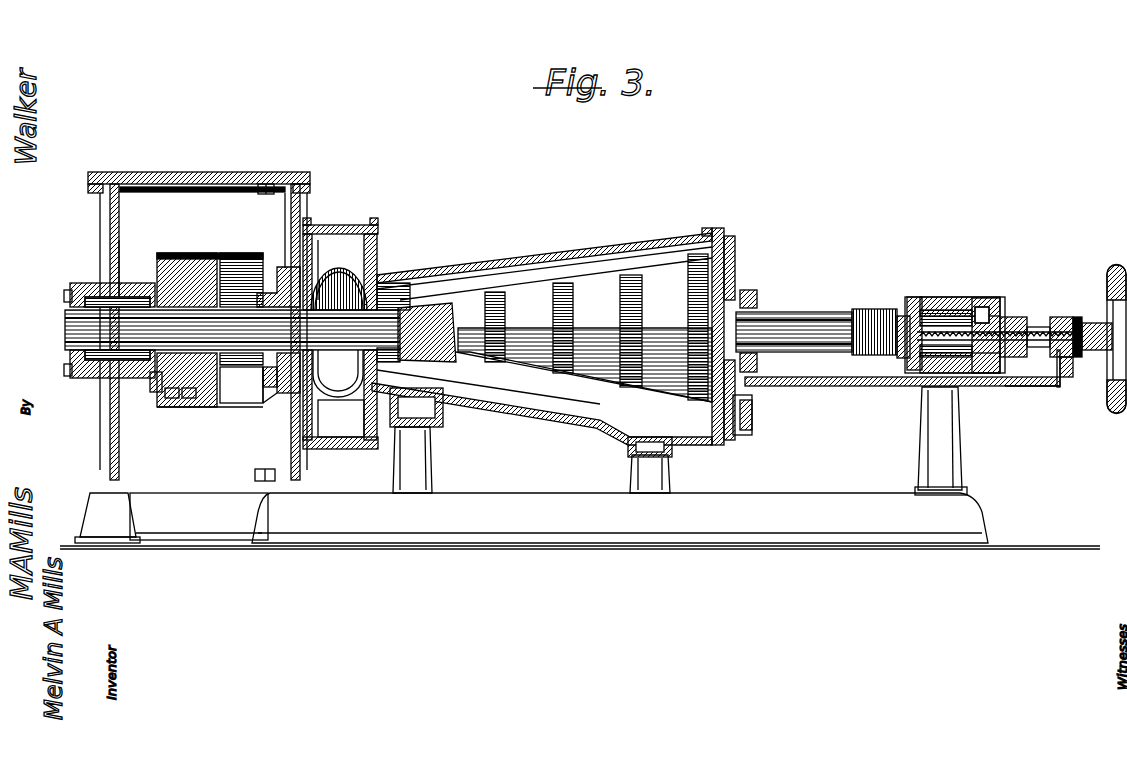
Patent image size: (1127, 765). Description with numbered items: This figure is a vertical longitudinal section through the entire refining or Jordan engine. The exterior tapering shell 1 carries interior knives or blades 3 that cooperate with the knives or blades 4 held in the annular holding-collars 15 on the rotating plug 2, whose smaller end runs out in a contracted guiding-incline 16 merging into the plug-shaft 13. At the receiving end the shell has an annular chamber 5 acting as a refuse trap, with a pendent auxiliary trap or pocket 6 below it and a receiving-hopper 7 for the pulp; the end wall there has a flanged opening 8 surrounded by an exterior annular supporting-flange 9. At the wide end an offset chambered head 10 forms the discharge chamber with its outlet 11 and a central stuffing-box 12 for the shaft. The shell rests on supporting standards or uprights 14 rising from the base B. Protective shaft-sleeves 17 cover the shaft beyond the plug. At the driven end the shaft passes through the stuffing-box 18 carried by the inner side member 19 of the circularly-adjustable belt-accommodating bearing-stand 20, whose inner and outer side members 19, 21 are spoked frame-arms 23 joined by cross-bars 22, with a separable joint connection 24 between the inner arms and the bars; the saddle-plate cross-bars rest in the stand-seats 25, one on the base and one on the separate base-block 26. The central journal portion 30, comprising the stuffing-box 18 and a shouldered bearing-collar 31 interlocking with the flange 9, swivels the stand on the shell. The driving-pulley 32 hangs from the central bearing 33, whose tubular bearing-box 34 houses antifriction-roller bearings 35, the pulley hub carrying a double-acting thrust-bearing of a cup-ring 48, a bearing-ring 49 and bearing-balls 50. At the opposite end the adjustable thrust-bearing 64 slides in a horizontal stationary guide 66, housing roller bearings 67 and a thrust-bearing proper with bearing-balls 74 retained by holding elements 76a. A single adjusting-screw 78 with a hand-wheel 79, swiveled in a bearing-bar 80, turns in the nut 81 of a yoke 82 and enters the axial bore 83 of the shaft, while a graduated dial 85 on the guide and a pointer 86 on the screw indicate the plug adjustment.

The base B is at (580, 521).
The exterior tapering shell 1 is at (522, 272).
The rotating plug 2 is at (584, 352).
The stationary knives or blades 3 is at (466, 266).
The plug knives or blades 4 is at (600, 265).
The annular chamber 5 is at (338, 373).
The pendent auxiliary trap or pocket 6 is at (341, 418).
The receiving-hopper 7 is at (345, 234).
The flanged opening 8 is at (338, 272).
The exterior annular supporting-flange 9 is at (285, 393).
The offset chambered head 10 is at (736, 282).
The outlet pipe or opening 11 is at (752, 408).
The central stuffing-box 12 is at (757, 298).
The plug-shaft 13 is at (866, 320).
The supporting standards or uprights 14 is at (432, 453).
The annular holding-collars 15 is at (643, 300).
The contracted guiding-incline 16 is at (425, 303).
The shaft-sleeves 17 is at (818, 318).
The stuffing-box 18 is at (280, 267).
The inner side member 19 is at (285, 212).
The belt-accommodating bearing-stand 20 is at (199, 171).
The outer side member 21 is at (123, 332).
The cross-bars 22 is at (200, 192).
The frame-arms 23 is at (119, 234).
The separable joint connection 24 is at (266, 184).
The stand-seats 25 is at (130, 500).
The base-block 26 is at (107, 518).
The central journal portion 30 is at (255, 400).
The shouldered bearing-collar 31 is at (268, 405).
The driving-pulley 32 is at (200, 253).
The central bearing 33 is at (108, 281).
The tubular bearing-box 34 is at (90, 378).
The antifriction-roller bearings 35 is at (66, 314).
The cup-ring 48 is at (155, 392).
The bearing-ring 49 is at (190, 407).
The antifriction bearing-balls 50 is at (172, 407).
The adjustable thrust-bearing 64 is at (955, 321).
The horizontal stationary guide 66 is at (856, 386).
The roller antifriction bearings 67 is at (962, 388).
The antifriction bearing-balls 74 is at (988, 305).
The nut-secured holding elements 76a is at (1012, 317).
The adjusting-screw 78 is at (1040, 327).
The hand-wheel 79 is at (1112, 275).
The bearing-bar 80 is at (1095, 350).
The nut 81 is at (1065, 317).
The yoke 82 is at (997, 352).
The axial bore 83 is at (915, 305).
The graduated dial 85 is at (1065, 378).
The pointer or index-finger 86 is at (1078, 320).